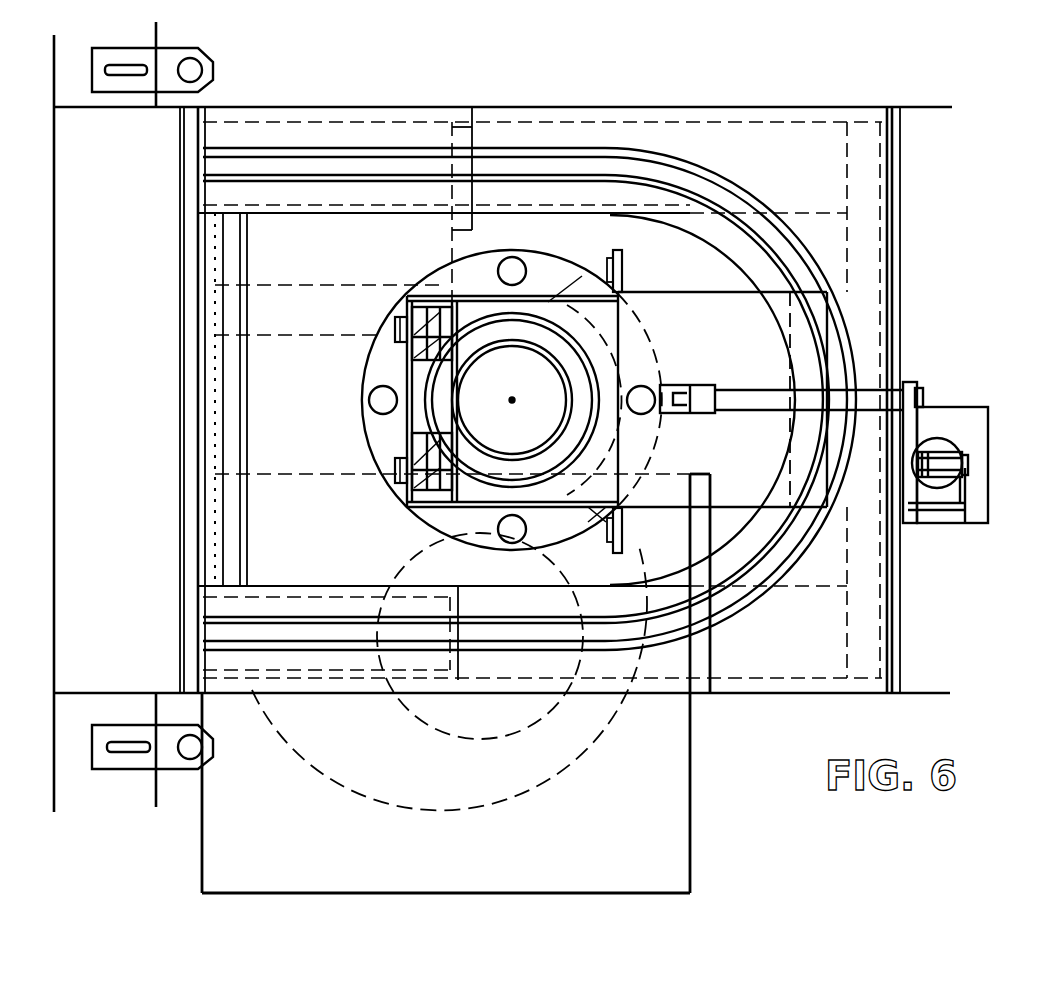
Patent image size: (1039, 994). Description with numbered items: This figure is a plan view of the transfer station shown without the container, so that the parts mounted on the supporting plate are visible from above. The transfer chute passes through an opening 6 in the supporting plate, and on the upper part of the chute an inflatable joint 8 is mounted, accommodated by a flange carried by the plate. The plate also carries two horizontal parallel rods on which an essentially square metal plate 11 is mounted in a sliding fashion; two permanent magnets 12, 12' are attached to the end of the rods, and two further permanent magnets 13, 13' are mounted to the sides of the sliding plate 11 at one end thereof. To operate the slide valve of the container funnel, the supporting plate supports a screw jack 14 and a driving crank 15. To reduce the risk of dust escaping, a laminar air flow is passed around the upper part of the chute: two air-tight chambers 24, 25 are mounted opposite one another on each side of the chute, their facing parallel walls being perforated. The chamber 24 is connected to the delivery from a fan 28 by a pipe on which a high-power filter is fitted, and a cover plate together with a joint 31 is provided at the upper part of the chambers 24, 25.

The opening 6 is at (480, 357).
The inflatable joint 8 is at (533, 330).
The metal plate 11 is at (748, 332).
The permanent magnet 12 is at (357, 358).
The permanent magnet 12' is at (367, 501).
The permanent magnet 13 is at (647, 540).
The permanent magnet 13' is at (654, 267).
The screw jack 14 is at (966, 470).
The driving crank 15 is at (908, 422).
The air-tight chamber 24 is at (357, 660).
The air-tight chamber 25 is at (317, 140).
The fan 28 is at (623, 747).
The joint 31 is at (697, 184).